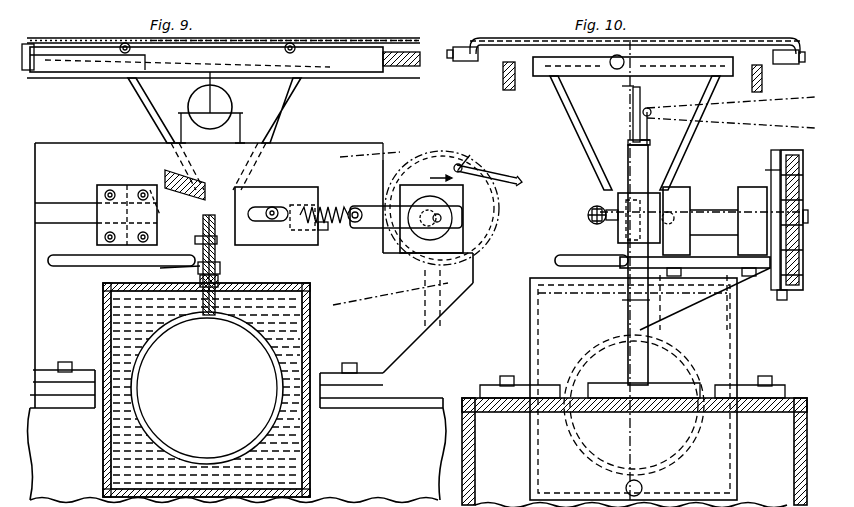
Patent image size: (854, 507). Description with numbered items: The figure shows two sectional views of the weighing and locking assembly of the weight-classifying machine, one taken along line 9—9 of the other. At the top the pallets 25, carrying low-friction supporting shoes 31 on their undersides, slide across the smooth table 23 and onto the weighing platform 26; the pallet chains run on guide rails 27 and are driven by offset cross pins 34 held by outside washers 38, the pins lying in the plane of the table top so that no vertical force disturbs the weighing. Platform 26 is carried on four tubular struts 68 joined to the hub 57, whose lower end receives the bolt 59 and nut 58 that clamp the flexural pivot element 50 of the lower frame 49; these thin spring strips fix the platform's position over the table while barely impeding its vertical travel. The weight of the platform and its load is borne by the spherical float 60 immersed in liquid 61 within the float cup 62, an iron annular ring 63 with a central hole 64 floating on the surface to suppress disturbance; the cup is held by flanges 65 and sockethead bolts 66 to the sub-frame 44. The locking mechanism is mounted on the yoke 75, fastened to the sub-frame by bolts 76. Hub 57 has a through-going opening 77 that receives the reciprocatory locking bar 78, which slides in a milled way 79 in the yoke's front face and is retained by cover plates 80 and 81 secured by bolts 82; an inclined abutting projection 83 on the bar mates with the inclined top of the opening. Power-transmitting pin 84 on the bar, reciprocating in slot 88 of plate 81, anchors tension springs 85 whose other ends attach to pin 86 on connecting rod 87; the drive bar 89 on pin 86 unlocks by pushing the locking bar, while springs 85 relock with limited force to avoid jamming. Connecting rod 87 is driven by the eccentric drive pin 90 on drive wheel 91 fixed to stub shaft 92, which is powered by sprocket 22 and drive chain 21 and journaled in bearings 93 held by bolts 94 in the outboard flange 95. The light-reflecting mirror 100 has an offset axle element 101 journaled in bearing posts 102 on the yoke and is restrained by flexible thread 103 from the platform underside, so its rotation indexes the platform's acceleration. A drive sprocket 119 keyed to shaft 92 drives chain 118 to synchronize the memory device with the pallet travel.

In FIG. 10, the section line 9— 9 is at (626, 270).
In FIG. 9, the drive chain 21 is at (392, 150).
In FIG. 10, the drive chain 21 is at (777, 152).
In FIG. 9, the sprocket 22 is at (450, 152).
In FIG. 10, the sprocket 22 is at (805, 165).
In FIG. 9, the table surface 23 is at (31, 44).
In FIG. 9, the pallet 25 is at (94, 38).
In FIG. 10, the pallet 25 is at (548, 38).
In FIG. 9, the weighing platform 26 is at (107, 65).
In FIG. 10, the weighing platform 26 is at (548, 77).
In FIG. 9, the guide rail 27 is at (338, 80).
In FIG. 10, the guide rail 27 is at (508, 90).
In FIG. 9, the supporting shoe 31 is at (272, 40).
In FIG. 10, the supporting shoe 31 is at (520, 38).
In FIG. 9, the driving cross pin 34 is at (125, 43).
In FIG. 10, the outside washer 38 is at (480, 62).
In FIG. 9, the sub-frame 44 is at (424, 396).
In FIG. 10, the sub-frame 44 is at (798, 398).
In FIG. 9, the lower frame 49 is at (68, 255).
In FIG. 10, the lower frame 49 is at (588, 253).
In FIG. 9, the flexural pivot element 50 is at (203, 252).
In FIG. 9, the hub 57 is at (222, 262).
In FIG. 10, the hub 57 is at (622, 282).
In FIG. 9, the nut 58 is at (222, 268).
In FIG. 9, the bolt 59 is at (258, 284).
In FIG. 9, the float 60 is at (272, 352).
In FIG. 10, the float 60 is at (686, 445).
In FIG. 9, the liquid 61 is at (290, 445).
In FIG. 9, the float cup 62 is at (312, 478).
In FIG. 10, the float cup 62 is at (530, 300).
In FIG. 9, the annular ring 63 is at (314, 273).
In FIG. 10, the annular ring 63 is at (540, 280).
In FIG. 9, the central hole 64 is at (196, 270).
In FIG. 10, the flange 65 is at (492, 391).
In FIG. 10, the sockethead bolt 66 is at (507, 376).
In FIG. 9, the strut 68 is at (142, 114).
In FIG. 10, the strut 68 is at (586, 140).
In FIG. 9, the yoke 75 is at (66, 143).
In FIG. 10, the yoke 75 is at (637, 302).
In FIG. 9, the bolt 76 is at (62, 362).
In FIG. 9, the through-going opening 77 is at (195, 240).
In FIG. 9, the locking bar 78 is at (164, 196).
In FIG. 9, the milled way 79 is at (67, 203).
In FIG. 9, the cover plate 80 is at (138, 174).
In FIG. 9, the cover plate 81 is at (258, 187).
In FIG. 9, the bolt 82 is at (108, 190).
In FIG. 9, the inclined abutting projection 83 is at (192, 176).
In FIG. 9, the power-transmitting pin 84 is at (290, 206).
In FIG. 9, the tension spring 85 is at (334, 230).
In FIG. 10, the tension spring 85 is at (590, 212).
In FIG. 9, the pin 86 is at (357, 223).
In FIG. 10, the pin 86 is at (589, 222).
In FIG. 9, the connecting rod 87 is at (431, 171).
In FIG. 9, the slot 88 is at (276, 208).
In FIG. 9, the drive bar 89 is at (330, 207).
In FIG. 9, the drive pin 90 is at (470, 213).
In FIG. 9, the drive wheel 91 is at (464, 168).
In FIG. 9, the stub shaft 92 is at (420, 260).
In FIG. 10, the stub shaft 92 is at (708, 212).
In FIG. 9, the bearing 93 is at (447, 296).
In FIG. 10, the bearing 93 is at (734, 239).
In FIG. 10, the bolt 94 is at (673, 277).
In FIG. 10, the outboard flange 95 is at (768, 282).
In FIG. 9, the light-reflecting mirror 100 is at (232, 100).
In FIG. 10, the light-reflecting mirror 100 is at (632, 118).
In FIG. 9, the axle element 101 is at (195, 102).
In FIG. 10, the axle element 101 is at (650, 108).
In FIG. 9, the bearing post 102 is at (233, 143).
In FIG. 10, the bearing post 102 is at (650, 125).
In FIG. 9, the flexible thread 103 is at (214, 76).
In FIG. 10, the flexible thread 103 is at (630, 86).
In FIG. 9, the chain 118 is at (523, 181).
In FIG. 10, the chain 118 is at (770, 156).
In FIG. 9, the drive sprocket 119 is at (468, 160).
In FIG. 10, the drive sprocket 119 is at (778, 170).